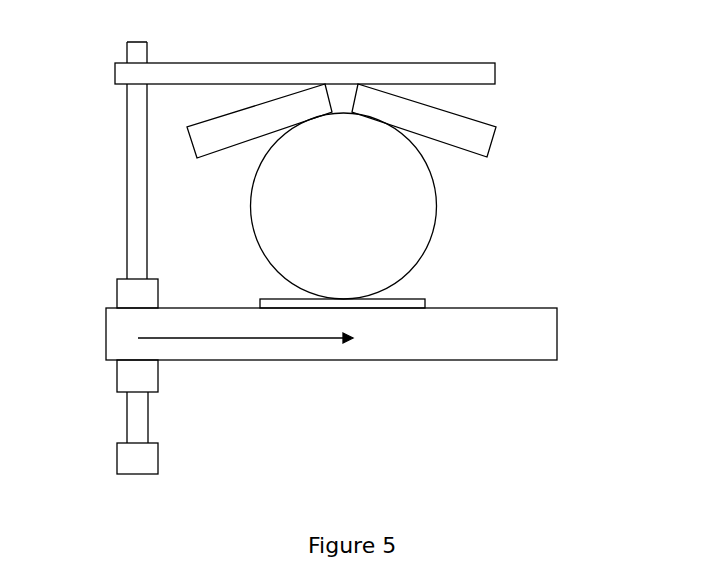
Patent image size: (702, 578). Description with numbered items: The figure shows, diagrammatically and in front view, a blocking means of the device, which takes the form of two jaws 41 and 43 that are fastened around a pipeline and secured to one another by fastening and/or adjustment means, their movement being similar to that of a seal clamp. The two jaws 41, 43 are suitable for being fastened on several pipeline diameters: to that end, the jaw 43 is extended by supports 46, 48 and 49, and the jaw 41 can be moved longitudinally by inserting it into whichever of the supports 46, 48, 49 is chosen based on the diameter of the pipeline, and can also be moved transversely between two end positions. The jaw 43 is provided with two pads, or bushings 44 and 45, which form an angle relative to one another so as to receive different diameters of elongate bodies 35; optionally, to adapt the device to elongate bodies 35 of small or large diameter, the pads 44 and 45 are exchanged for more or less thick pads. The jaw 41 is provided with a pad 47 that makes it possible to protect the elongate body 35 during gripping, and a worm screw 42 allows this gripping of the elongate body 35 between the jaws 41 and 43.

The elongate body 35 is at (428, 232).
The jaw 41 is at (543, 338).
The worm screw 42 is at (137, 228).
The jaw 43 is at (482, 73).
The pad 44 is at (209, 134).
The pad 45 is at (482, 137).
The support 46 is at (137, 460).
The pad 47 is at (413, 303).
The support 48 is at (137, 377).
The support 49 is at (137, 290).